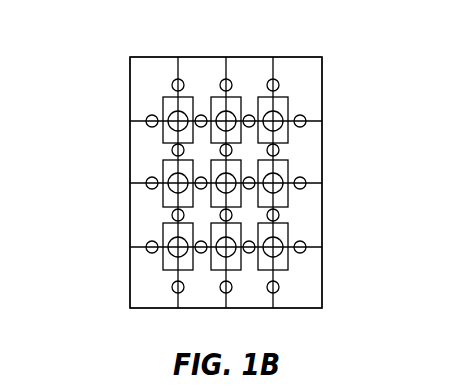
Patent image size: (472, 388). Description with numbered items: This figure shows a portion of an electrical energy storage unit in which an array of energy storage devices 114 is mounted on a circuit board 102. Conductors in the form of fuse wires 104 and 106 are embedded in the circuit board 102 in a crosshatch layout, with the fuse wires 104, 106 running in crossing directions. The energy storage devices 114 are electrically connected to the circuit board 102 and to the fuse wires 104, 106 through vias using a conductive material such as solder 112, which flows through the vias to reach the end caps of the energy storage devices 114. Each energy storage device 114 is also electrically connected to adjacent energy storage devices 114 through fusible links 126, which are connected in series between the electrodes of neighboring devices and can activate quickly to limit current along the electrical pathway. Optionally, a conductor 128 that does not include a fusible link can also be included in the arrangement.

The circuit board 102 is at (199, 84).
The fuse wire 104 is at (172, 67).
The fuse wire 106 is at (146, 121).
The solder 112 is at (284, 113).
The energy storage device 114 is at (162, 105).
The fusible link 126 is at (174, 152).
The conductor 128 is at (130, 153).